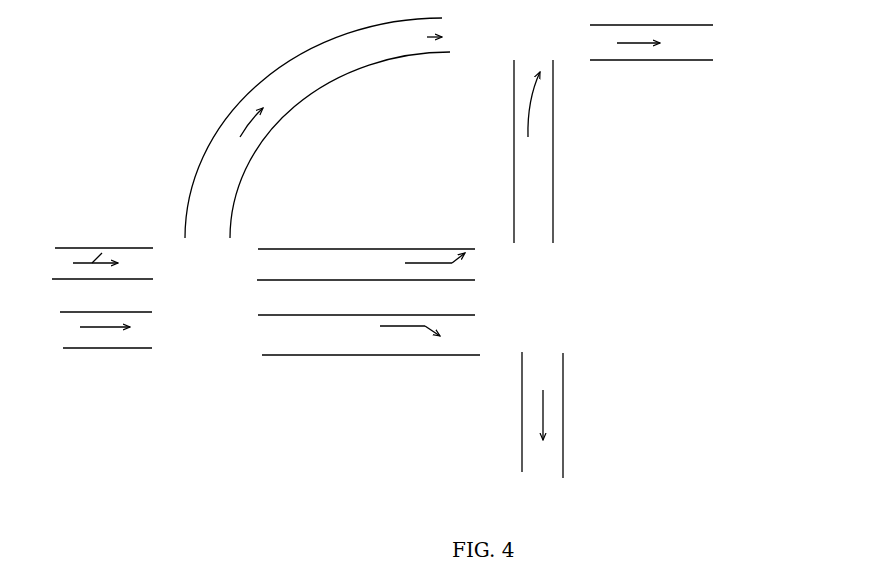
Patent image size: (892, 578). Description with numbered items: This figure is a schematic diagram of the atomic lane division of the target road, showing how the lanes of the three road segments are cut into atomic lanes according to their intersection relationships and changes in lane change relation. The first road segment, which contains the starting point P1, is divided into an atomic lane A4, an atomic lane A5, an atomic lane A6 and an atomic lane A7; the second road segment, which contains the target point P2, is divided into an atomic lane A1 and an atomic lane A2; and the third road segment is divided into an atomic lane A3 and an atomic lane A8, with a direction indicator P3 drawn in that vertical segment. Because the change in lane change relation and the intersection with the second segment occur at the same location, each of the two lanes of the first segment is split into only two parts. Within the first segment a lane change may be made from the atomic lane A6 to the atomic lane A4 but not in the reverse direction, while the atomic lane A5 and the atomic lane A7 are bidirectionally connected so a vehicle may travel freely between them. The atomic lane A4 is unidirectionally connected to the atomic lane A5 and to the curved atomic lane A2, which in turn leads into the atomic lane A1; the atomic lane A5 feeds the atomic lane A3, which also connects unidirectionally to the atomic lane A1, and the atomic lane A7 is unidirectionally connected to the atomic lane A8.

The atomic lane A1 is at (651, 57).
The atomic lane A2 is at (317, 128).
The atomic lane A3 is at (549, 151).
The atomic lane A4 is at (102, 251).
The atomic lane A5 is at (366, 252).
The atomic lane A6 is at (106, 345).
The atomic lane A7 is at (369, 349).
The atomic lane A8 is at (559, 415).
The point P1 is at (92, 329).
The point P2 is at (665, 45).
The transfer direction P3 is at (545, 433).